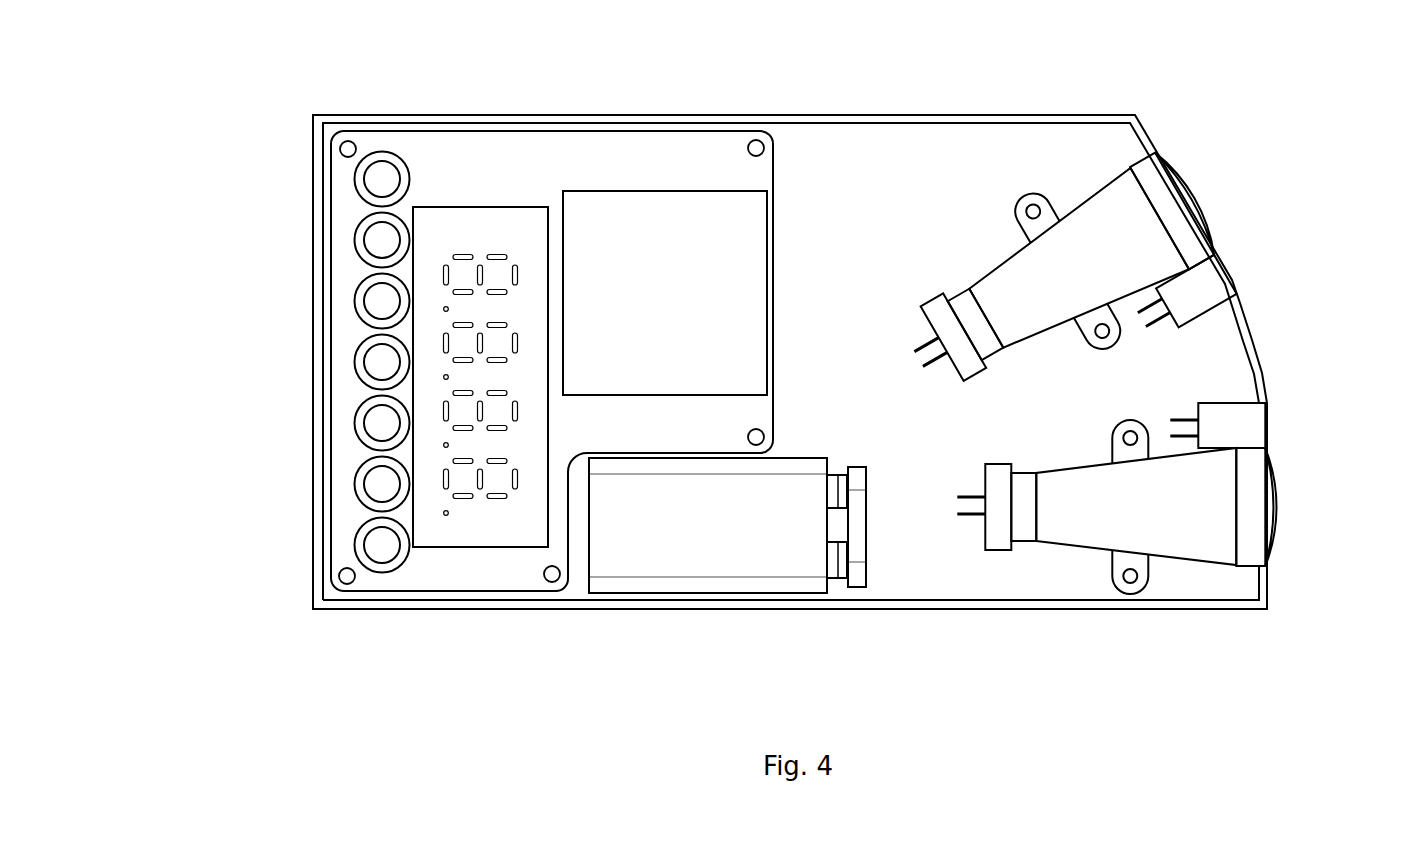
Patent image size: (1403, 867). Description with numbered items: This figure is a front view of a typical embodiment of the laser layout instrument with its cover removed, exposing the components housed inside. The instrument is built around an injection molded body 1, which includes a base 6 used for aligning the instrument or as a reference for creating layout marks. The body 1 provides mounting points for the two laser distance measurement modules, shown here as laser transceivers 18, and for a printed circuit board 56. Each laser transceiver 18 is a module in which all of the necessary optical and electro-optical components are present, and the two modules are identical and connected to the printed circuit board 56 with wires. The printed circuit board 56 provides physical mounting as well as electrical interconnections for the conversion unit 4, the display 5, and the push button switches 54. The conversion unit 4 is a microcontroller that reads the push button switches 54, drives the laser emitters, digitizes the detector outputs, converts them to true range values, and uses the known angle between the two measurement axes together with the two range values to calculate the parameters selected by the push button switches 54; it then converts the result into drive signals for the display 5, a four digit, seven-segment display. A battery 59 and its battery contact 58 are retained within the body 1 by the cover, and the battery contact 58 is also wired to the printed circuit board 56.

The body 1 is at (312, 568).
The conversion unit 4 is at (622, 191).
The display 5 is at (495, 207).
The base 6 is at (938, 610).
The laser transceiver 18 is at (1125, 230).
The push button switches 54 is at (357, 172).
The printed circuit board 56 is at (774, 159).
The battery contact 58 is at (852, 587).
The battery 59 is at (712, 578).